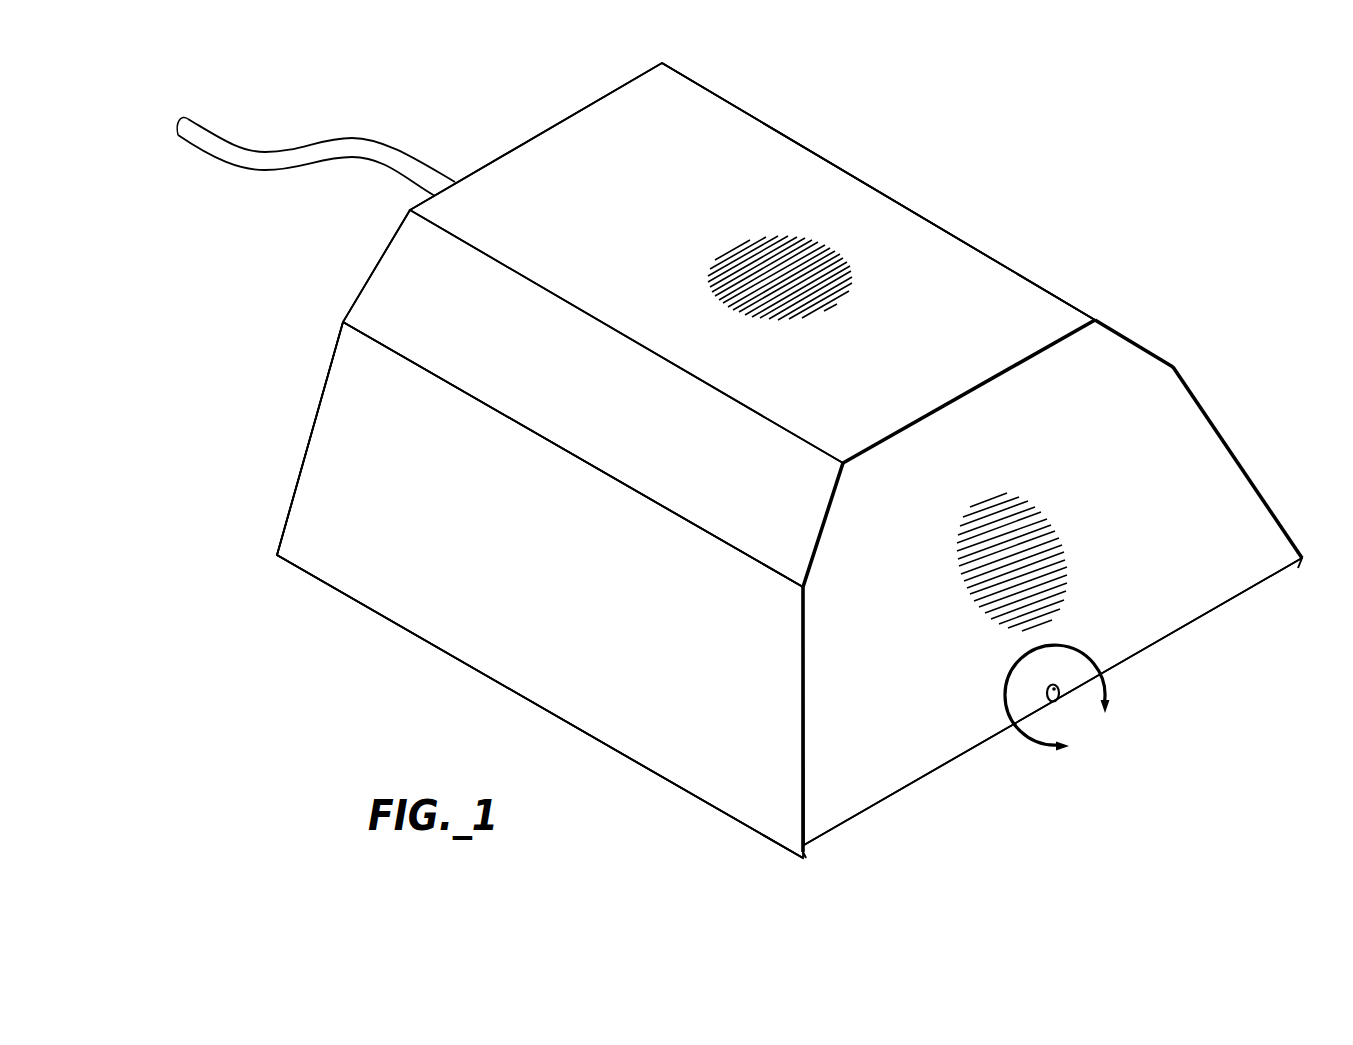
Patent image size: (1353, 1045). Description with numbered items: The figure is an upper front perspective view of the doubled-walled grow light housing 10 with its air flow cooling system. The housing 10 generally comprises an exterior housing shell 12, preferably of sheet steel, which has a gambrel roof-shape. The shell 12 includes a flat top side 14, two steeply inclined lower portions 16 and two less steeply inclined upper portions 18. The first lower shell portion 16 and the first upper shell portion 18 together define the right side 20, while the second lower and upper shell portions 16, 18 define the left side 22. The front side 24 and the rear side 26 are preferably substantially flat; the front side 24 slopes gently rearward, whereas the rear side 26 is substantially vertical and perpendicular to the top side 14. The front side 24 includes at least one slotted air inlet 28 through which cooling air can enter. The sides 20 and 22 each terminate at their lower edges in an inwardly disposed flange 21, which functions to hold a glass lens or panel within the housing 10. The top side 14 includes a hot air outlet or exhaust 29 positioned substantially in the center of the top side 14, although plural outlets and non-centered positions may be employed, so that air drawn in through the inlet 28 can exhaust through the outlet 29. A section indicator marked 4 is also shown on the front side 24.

The housing 10 is at (996, 217).
The exterior housing shell 12 is at (603, 108).
The flat top side 14 is at (971, 334).
The steeply inclined lower portion 16 is at (1140, 339).
The less steeply inclined upper portion 18 is at (1241, 441).
The right side 20 is at (896, 154).
The inwardly disposed flange 21 is at (1301, 566).
The left side 22 is at (635, 736).
The front side 24 is at (897, 765).
The rear side 26 is at (286, 434).
The slotted air inlet 28 is at (1066, 541).
The hot air outlet 29 is at (728, 256).
The section line 4-4 (rotation indicator) 4 is at (1059, 703).